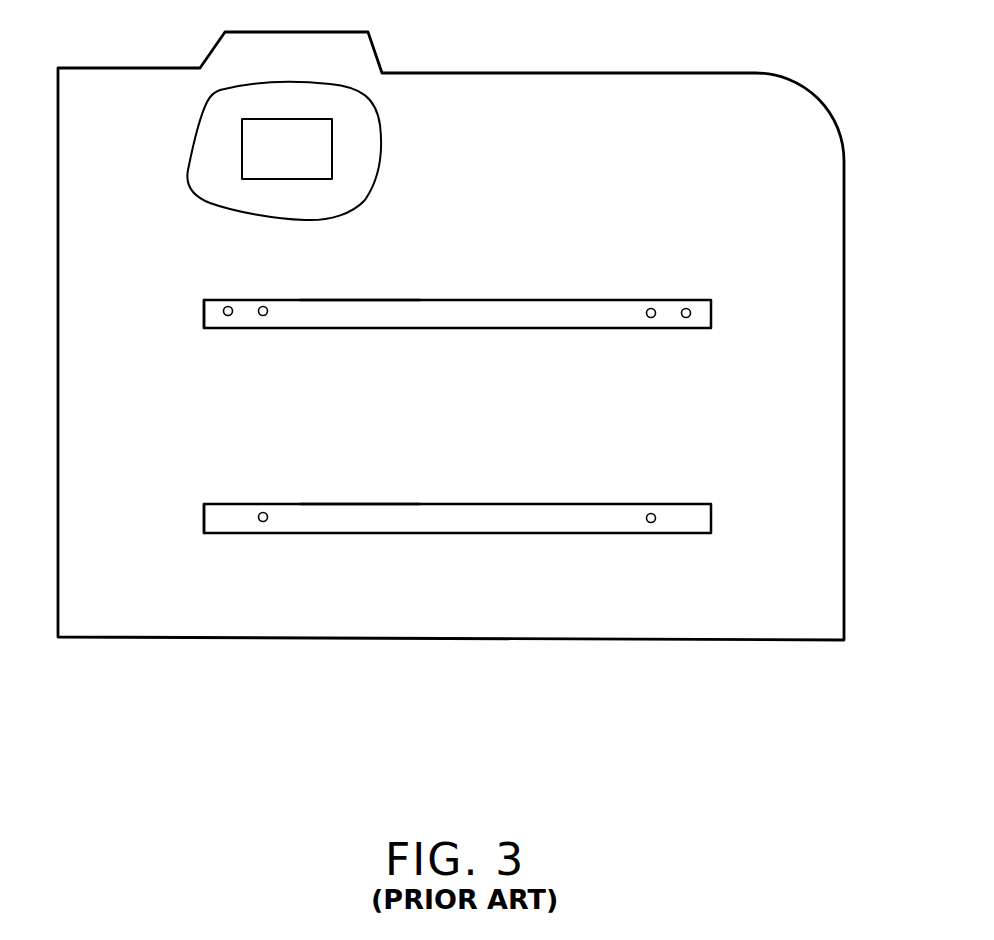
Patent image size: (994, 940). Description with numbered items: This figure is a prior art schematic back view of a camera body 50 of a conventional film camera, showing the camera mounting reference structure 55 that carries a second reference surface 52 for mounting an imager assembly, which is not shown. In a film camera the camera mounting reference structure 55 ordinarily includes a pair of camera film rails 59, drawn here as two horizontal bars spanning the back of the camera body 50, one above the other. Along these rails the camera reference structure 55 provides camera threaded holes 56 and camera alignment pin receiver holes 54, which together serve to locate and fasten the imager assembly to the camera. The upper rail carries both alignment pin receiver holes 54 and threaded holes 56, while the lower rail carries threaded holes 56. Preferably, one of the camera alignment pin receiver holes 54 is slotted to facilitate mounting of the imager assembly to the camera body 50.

The camera body 50 is at (643, 80).
The second reference surface 52 is at (505, 322).
The camera alignment pin receiver holes 54 is at (227, 305).
The camera mounting reference structure 55 is at (363, 328).
The camera threaded holes 56 is at (263, 315).
The camera film rails 59 is at (204, 315).